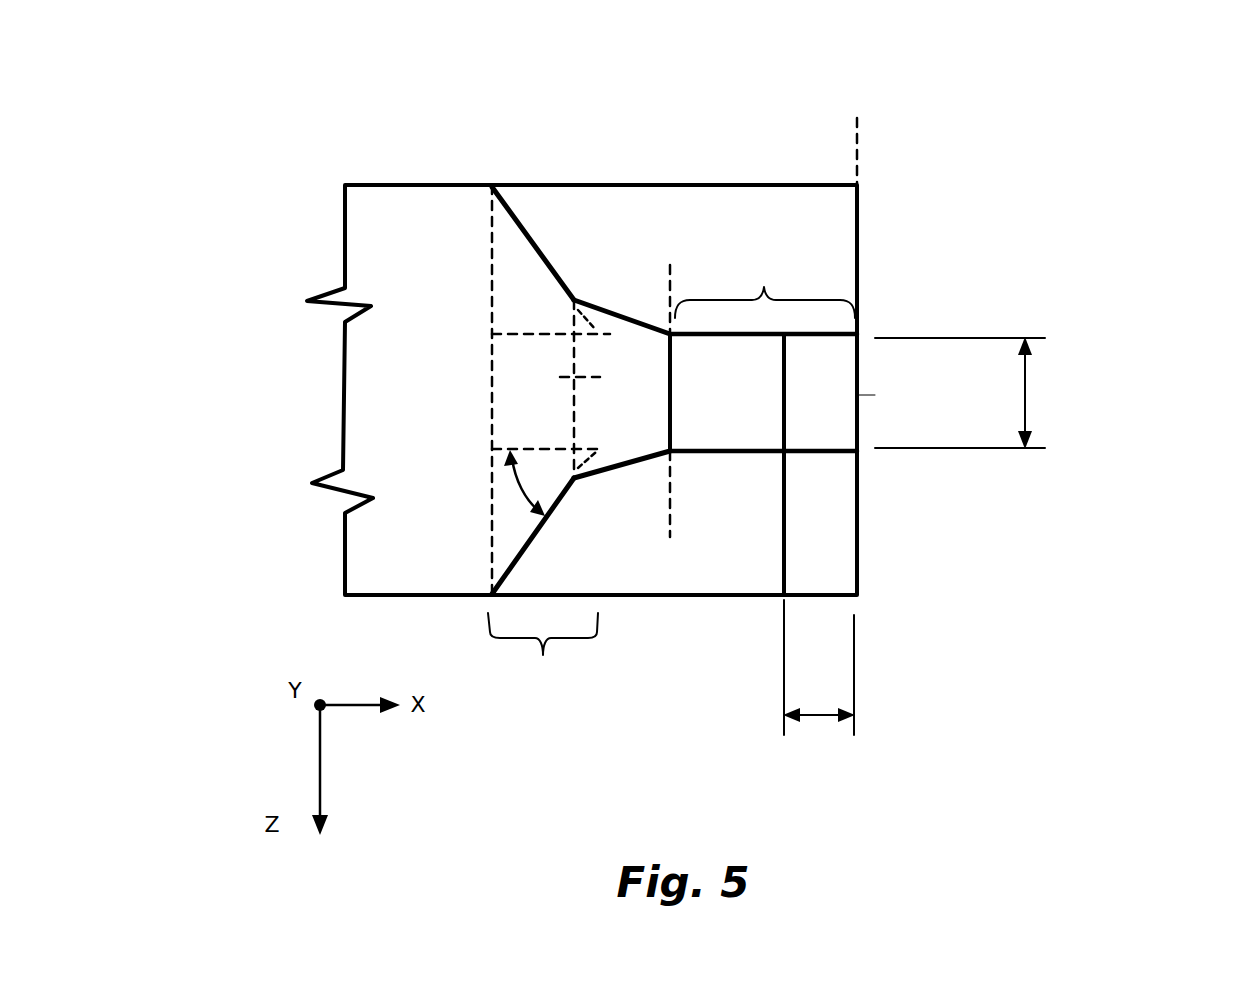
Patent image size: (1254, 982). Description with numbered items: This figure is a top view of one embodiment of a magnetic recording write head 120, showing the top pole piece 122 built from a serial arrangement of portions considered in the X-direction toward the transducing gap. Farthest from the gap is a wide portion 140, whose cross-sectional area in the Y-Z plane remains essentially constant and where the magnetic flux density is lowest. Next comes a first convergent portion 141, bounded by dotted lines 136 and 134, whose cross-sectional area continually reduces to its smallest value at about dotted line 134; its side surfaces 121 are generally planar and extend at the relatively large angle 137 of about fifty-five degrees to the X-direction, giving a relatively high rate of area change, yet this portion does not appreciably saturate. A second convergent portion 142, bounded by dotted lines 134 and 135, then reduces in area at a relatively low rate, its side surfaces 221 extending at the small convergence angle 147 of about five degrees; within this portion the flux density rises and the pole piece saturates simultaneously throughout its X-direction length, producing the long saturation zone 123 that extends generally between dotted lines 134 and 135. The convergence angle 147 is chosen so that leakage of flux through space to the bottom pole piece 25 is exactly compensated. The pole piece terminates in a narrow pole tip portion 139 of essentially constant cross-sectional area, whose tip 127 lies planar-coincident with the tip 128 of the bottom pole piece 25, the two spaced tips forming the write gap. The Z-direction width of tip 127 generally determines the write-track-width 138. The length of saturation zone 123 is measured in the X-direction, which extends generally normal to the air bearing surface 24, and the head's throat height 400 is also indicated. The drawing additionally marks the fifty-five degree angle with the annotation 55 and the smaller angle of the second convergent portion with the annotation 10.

The magnetic recording write head 120 is at (1058, 180).
The side surfaces 121 is at (525, 212).
The top pole piece 122 is at (835, 425).
The long saturation zone 123 is at (540, 696).
The tip of top pole 127 is at (933, 393).
The tip of bottom pole 128 is at (914, 372).
The dotted line 134 is at (540, 418).
The dotted line 135 is at (676, 270).
The dotted line 136 is at (492, 376).
The angle 137 is at (574, 322).
The write-track-width 138 is at (1027, 405).
The narrow pole tip portion 139 is at (763, 285).
The wide portion 140 is at (465, 210).
The first convergent portion 141 is at (516, 292).
The second convergent portion 142 is at (600, 378).
The convergence angle 147 is at (616, 345).
The side surfaces 221 is at (604, 300).
The air bearing surface 24 is at (860, 170).
The bottom pole piece 25 is at (816, 547).
The first flare angle (55 degrees) 55 is at (517, 487).
The second flare angle (10 degrees) 10 is at (622, 494).
The throat height 400 is at (812, 718).